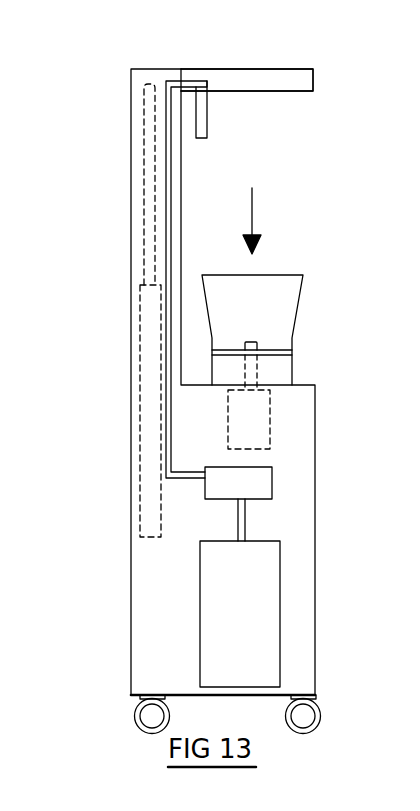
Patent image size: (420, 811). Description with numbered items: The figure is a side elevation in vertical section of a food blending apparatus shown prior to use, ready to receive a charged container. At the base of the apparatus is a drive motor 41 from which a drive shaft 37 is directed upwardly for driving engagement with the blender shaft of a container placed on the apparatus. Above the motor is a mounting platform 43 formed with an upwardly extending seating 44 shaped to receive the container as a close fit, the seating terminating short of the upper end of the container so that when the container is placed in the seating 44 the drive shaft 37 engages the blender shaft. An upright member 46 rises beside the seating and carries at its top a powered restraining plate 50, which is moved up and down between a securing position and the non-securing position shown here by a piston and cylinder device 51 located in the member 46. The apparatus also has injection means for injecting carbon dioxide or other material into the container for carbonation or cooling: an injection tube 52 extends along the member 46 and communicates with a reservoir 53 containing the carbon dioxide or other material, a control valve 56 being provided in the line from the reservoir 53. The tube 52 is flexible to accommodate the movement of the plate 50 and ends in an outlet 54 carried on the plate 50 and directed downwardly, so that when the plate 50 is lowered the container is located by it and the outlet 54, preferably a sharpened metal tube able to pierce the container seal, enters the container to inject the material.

The drive shaft 37 is at (250, 374).
The drive motor 41 is at (270, 413).
The mounting platform 43 is at (292, 356).
The seating 44 is at (202, 275).
The member 46 is at (132, 190).
The plate 50 is at (298, 78).
The piston and cylinder device 51 is at (146, 472).
The injection tube 52 is at (167, 158).
The reservoir 53 is at (200, 596).
The outlet 54 is at (200, 118).
The control valve 56 is at (205, 492).